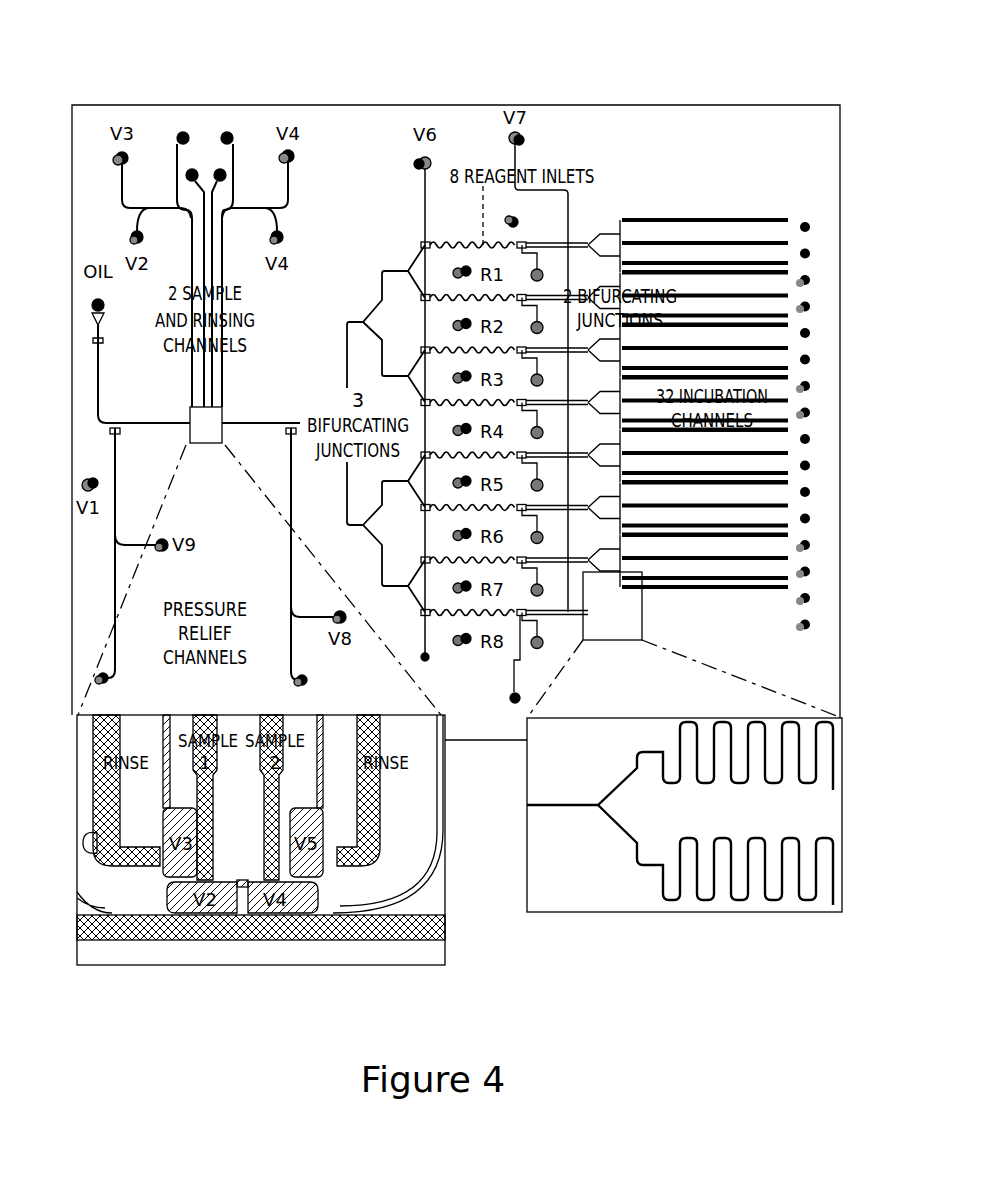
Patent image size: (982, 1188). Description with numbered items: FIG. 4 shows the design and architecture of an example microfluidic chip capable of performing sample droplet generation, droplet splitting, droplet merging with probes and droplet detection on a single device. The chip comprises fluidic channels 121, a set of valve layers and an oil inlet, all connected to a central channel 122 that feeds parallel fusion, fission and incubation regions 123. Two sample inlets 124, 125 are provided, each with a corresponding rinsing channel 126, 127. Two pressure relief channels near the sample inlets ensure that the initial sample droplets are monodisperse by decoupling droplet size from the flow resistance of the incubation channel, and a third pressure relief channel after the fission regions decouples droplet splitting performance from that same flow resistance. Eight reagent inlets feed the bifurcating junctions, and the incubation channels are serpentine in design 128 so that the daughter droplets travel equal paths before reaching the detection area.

The fluidic channels 121 is at (181, 127).
The central channel 122 is at (133, 436).
The parallel fusion, fission and incubation regions 123 is at (724, 177).
The first sample inlet 124 is at (204, 792).
The second sample inlet 125 is at (258, 826).
The first rinsing channel 126 is at (128, 876).
The second rinsing channel 127 is at (341, 876).
The serpentine incubation channel design 128 is at (713, 935).